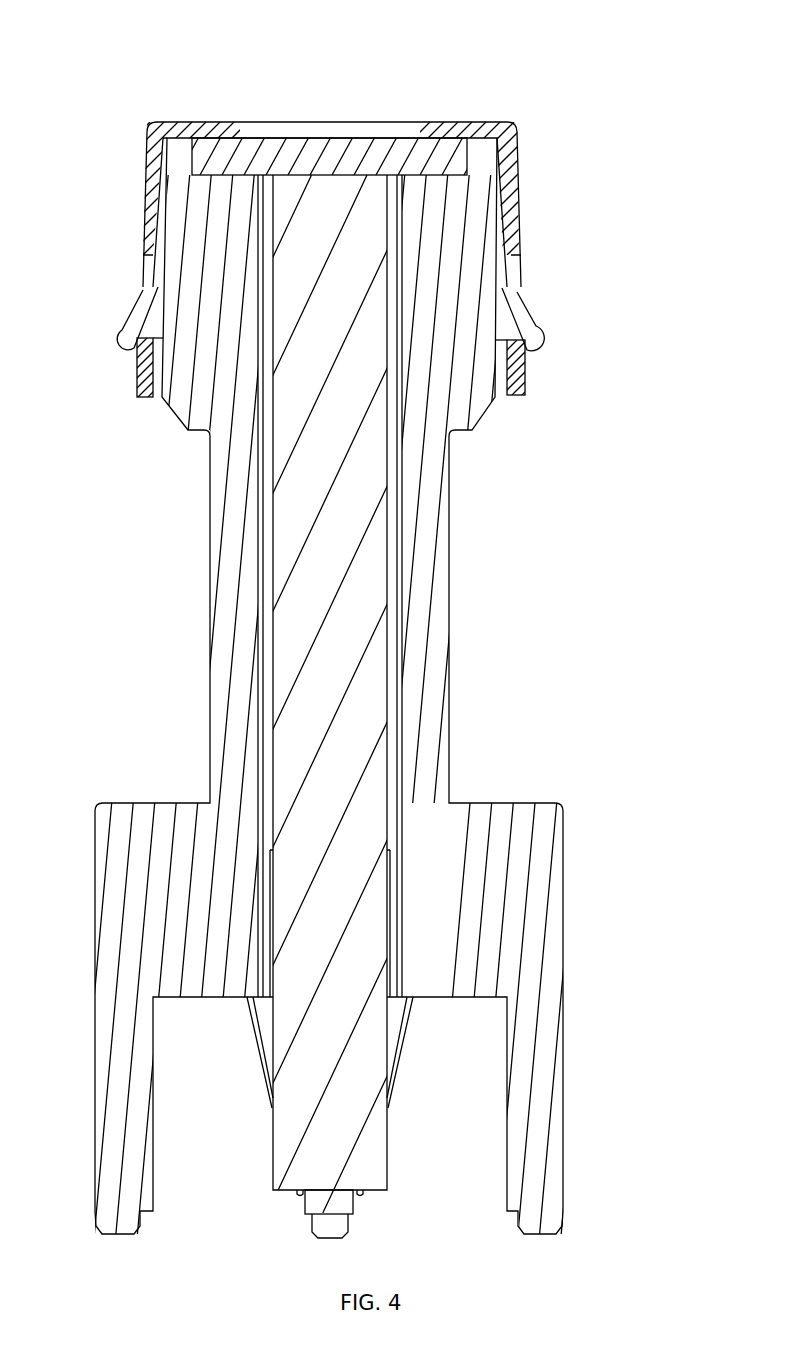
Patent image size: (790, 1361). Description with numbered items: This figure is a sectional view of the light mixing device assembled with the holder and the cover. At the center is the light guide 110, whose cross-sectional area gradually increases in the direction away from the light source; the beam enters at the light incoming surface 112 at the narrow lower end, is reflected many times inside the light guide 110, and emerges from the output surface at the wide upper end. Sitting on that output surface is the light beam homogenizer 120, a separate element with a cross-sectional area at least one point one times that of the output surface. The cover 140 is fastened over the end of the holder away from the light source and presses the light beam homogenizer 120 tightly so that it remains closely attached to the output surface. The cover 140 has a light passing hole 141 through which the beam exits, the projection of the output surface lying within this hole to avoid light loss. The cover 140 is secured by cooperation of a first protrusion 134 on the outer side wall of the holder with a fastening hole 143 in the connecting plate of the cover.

The light guide 110 is at (335, 642).
The light incoming surface 112 is at (355, 1213).
The light beam homogenizer 120 is at (240, 147).
The first protrusion 134 is at (522, 332).
The cover 140 is at (481, 128).
The light passing hole 141 is at (328, 125).
The fastening hole 143 is at (523, 383).